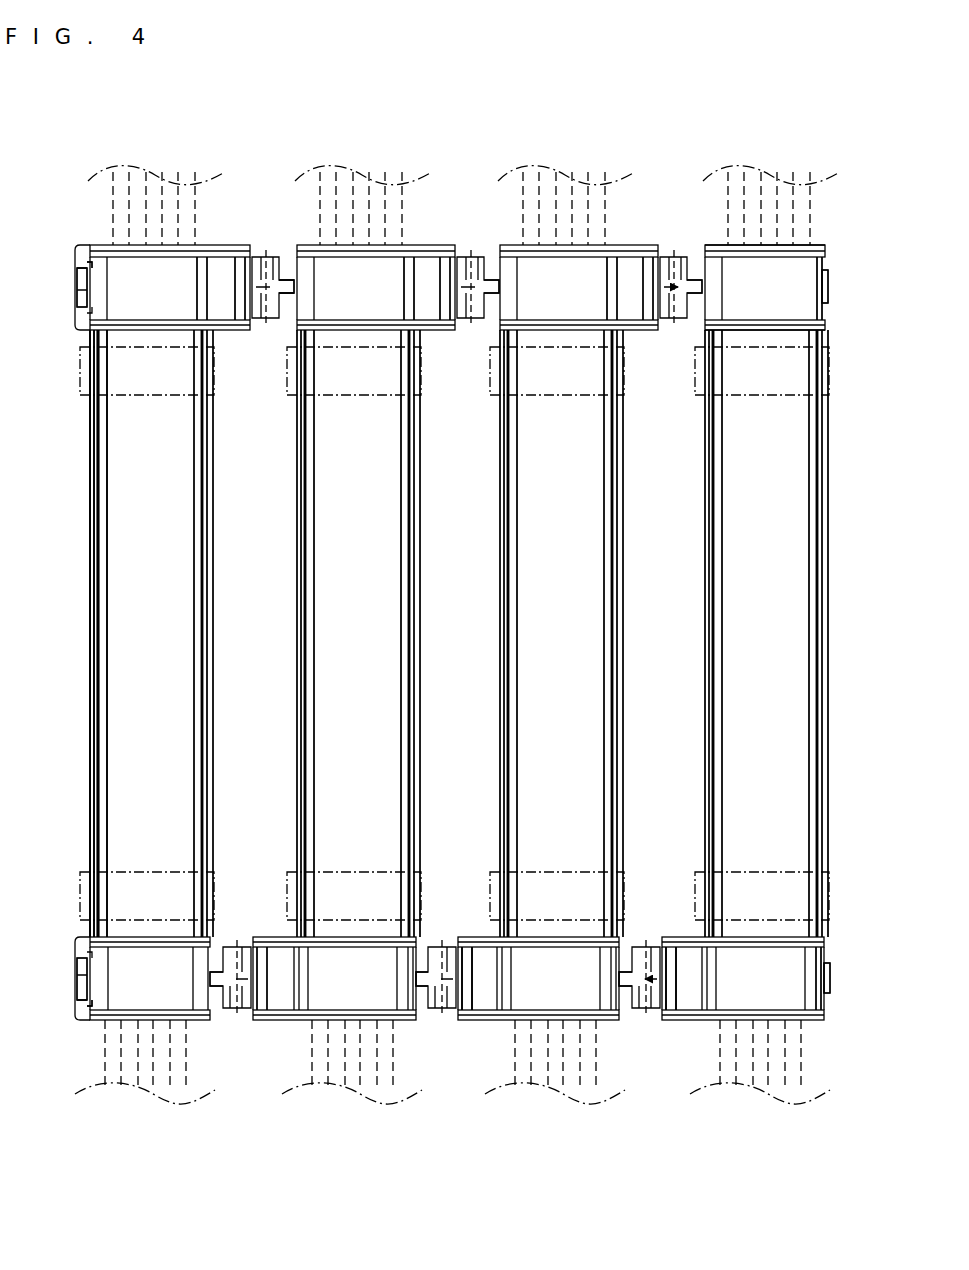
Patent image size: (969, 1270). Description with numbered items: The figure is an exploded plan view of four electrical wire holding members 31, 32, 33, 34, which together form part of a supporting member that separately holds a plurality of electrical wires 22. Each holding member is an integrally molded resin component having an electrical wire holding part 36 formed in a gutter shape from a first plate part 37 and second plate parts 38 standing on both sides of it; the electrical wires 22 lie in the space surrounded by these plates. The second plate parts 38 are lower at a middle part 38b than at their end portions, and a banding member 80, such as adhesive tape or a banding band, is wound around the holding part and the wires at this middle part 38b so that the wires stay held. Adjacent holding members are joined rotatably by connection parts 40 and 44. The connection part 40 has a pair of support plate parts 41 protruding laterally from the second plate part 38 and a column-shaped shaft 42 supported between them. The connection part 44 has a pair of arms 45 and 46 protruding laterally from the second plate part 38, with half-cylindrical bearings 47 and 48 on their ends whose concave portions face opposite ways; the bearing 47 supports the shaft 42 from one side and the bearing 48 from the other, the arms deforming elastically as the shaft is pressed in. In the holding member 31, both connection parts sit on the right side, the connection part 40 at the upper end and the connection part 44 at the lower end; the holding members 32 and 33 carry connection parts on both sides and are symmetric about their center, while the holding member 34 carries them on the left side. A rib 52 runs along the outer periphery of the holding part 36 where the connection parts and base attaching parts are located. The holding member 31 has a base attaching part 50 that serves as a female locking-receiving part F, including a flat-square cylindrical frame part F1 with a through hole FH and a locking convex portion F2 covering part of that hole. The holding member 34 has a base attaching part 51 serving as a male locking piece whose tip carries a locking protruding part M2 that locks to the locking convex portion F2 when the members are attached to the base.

The electrical wire 22 is at (153, 183).
The electrical wire holding member 31 is at (90, 609).
The electrical wire holding member 32 is at (297, 609).
The electrical wire holding member 33 is at (500, 609).
The electrical wire holding member 34 is at (705, 609).
The electrical wire holding part 36 is at (54, 530).
The first plate part 37 is at (110, 549).
The second plate part 38 is at (92, 545).
The middle part 38b is at (92, 492).
The connection part 40 is at (229, 338).
The support plate part 41 is at (208, 244).
The shaft 42 is at (240, 244).
The connection part 44 is at (284, 334).
The arm 45 is at (291, 303).
The arm 46 is at (291, 270).
The bearing 47 is at (276, 290).
The bearing 48 is at (268, 258).
The base attaching part 50 is at (73, 334).
The base attaching part 51 is at (830, 289).
The rib 52 is at (826, 250).
The banding member 80 is at (83, 370).
The locking-receiving part F is at (44, 260).
The frame part F1 is at (78, 258).
The locking convex portion F2 is at (80, 293).
The through hole FH is at (110, 244).
The locking protruding part M2 is at (831, 298).